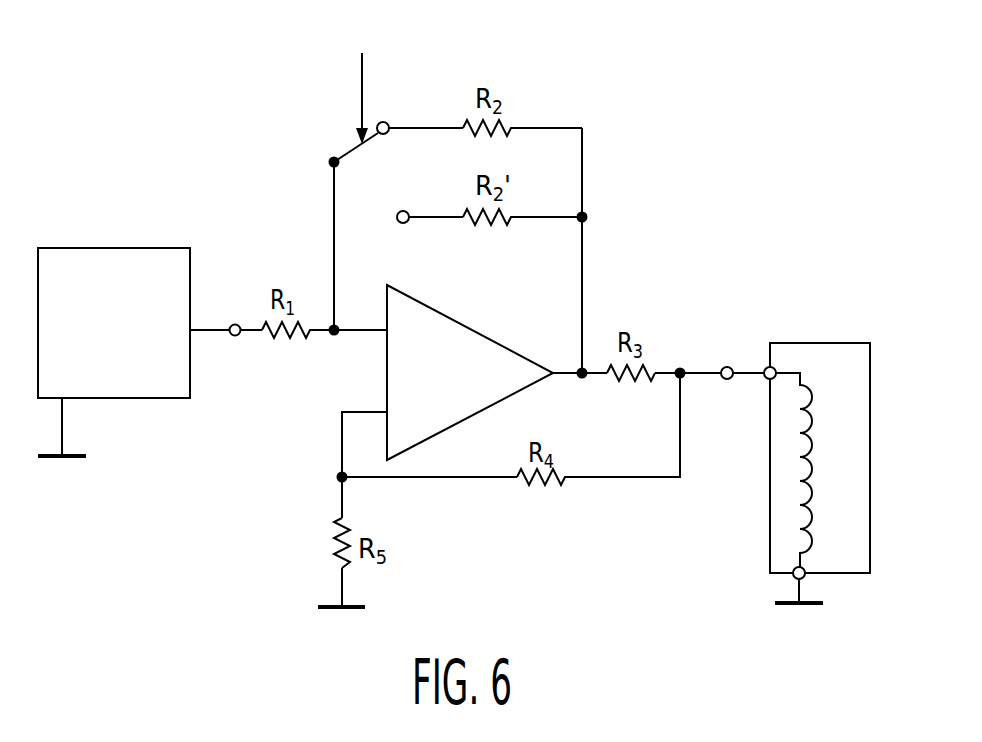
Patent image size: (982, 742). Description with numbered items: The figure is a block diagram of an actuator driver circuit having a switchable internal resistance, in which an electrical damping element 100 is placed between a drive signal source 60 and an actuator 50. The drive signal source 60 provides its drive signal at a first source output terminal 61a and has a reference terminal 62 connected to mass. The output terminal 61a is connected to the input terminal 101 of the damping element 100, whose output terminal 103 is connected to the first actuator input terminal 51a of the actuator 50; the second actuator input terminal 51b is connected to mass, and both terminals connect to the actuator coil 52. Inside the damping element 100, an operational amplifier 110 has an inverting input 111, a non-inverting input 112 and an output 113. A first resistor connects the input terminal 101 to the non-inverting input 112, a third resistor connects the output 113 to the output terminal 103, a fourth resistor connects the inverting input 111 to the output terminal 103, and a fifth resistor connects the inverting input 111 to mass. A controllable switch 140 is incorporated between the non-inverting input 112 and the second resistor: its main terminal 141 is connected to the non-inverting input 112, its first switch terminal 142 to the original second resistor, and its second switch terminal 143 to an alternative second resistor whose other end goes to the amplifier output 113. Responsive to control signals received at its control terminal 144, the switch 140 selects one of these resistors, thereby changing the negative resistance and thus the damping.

The electrical damping element 100 is at (207, 179).
The drive signal source 60 is at (130, 248).
The first source output terminal 61a is at (180, 342).
The reference terminal 62 is at (75, 387).
The input terminal 101 is at (235, 324).
The main terminal 141 is at (330, 158).
The first switch terminal 142 is at (387, 120).
The second switch terminal 143 is at (399, 223).
The control terminal 144 is at (361, 92).
The controllable switch 140 is at (369, 164).
The operational amplifier 110 is at (489, 339).
The inverting input 111 is at (430, 423).
The non-inverting input 112 is at (430, 347).
The amplifier output 113 is at (515, 387).
The output terminal 103 is at (727, 365).
The actuator 50 is at (809, 343).
The first actuator input terminal 51a is at (766, 381).
The second actuator input terminal 51b is at (793, 579).
The actuator coil 52 is at (803, 487).